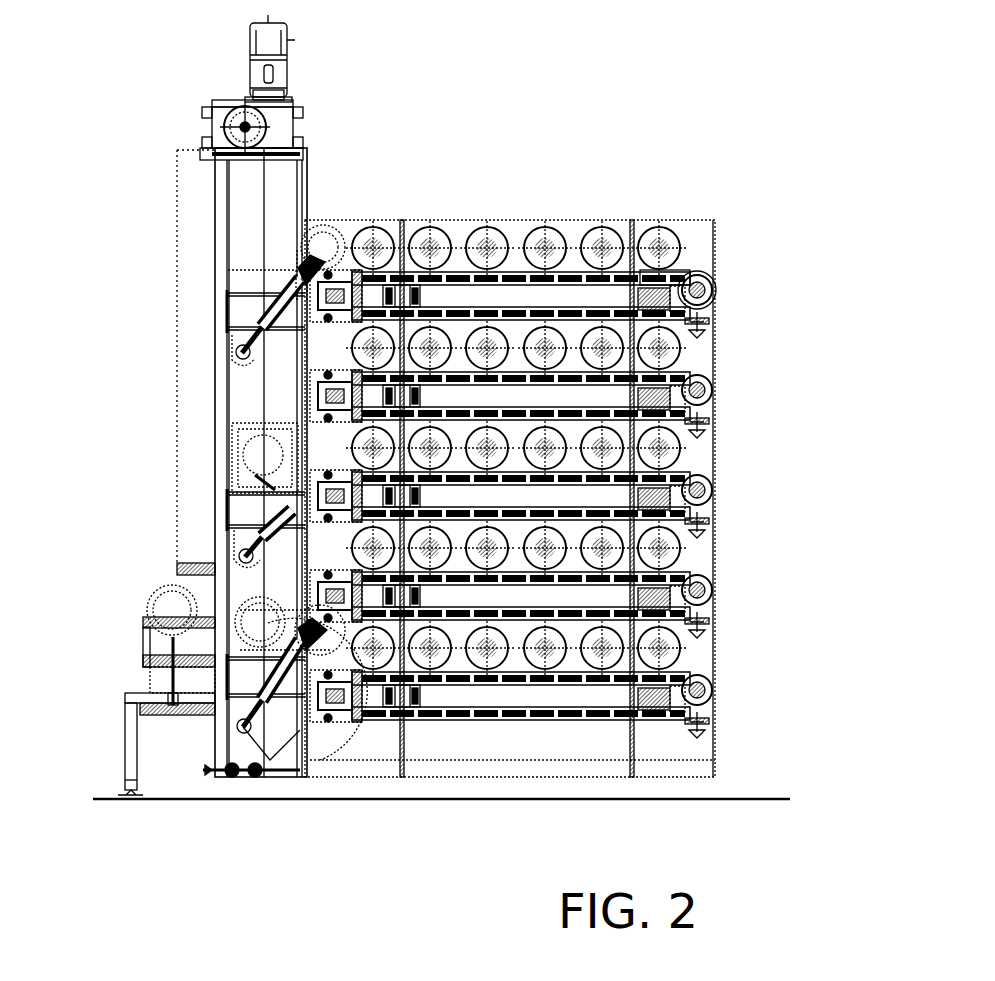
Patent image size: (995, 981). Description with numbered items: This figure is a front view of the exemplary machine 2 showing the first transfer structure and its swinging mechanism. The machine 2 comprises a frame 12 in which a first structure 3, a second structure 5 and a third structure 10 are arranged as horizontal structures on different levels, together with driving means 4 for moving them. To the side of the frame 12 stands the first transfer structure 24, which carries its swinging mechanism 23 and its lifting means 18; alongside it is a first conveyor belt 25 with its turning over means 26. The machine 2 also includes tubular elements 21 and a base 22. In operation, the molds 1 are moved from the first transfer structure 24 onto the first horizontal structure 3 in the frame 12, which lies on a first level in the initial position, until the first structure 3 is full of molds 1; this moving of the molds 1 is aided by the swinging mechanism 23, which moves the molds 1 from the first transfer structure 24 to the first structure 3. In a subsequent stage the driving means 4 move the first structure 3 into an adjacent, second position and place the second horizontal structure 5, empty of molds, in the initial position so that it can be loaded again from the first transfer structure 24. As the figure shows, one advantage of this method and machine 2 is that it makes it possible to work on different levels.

The molds 1 is at (690, 136).
The machine 2 is at (583, 148).
The first structure 3 is at (430, 280).
The driving means 4 is at (703, 278).
The second structure 5 is at (373, 277).
The third structure 10 is at (665, 270).
The frame 12 is at (715, 352).
The lifting means 18 is at (288, 50).
The tubular elements 21 is at (680, 673).
The base 22 is at (660, 672).
The swinging mechanism 23 is at (268, 310).
The first transfer structure 24 is at (217, 373).
The first conveyor belt 25 is at (163, 643).
The turning over means 26 is at (190, 718).